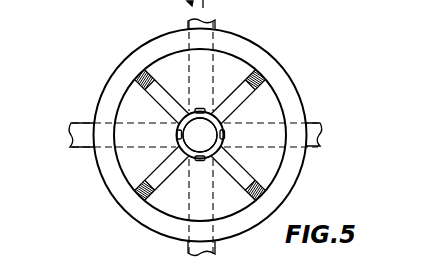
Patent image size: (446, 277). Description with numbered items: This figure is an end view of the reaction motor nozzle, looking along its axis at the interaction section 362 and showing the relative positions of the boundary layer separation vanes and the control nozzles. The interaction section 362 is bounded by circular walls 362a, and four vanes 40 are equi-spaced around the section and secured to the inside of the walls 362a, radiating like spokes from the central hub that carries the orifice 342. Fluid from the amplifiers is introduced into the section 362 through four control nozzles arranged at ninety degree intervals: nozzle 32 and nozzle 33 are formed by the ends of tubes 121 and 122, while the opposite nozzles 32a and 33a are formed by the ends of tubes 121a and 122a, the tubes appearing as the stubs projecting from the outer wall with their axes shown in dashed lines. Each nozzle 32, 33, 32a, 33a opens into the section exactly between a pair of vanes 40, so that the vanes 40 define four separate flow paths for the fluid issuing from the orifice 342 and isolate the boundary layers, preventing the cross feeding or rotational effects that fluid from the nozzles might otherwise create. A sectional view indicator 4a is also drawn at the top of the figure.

The interaction section 362 is at (152, 115).
The walls 362a is at (282, 157).
The vanes 40 is at (164, 91).
The nozzle 32 is at (177, 134).
The nozzle 32a is at (202, 109).
The nozzle 33 is at (225, 134).
The nozzle 33a is at (199, 161).
The orifice 342 is at (190, 151).
The tube 121 is at (214, 21).
The tube 121a is at (318, 142).
The tube 122 is at (214, 247).
The tube 122a is at (72, 140).
The section indicator 4a is at (209, 7).